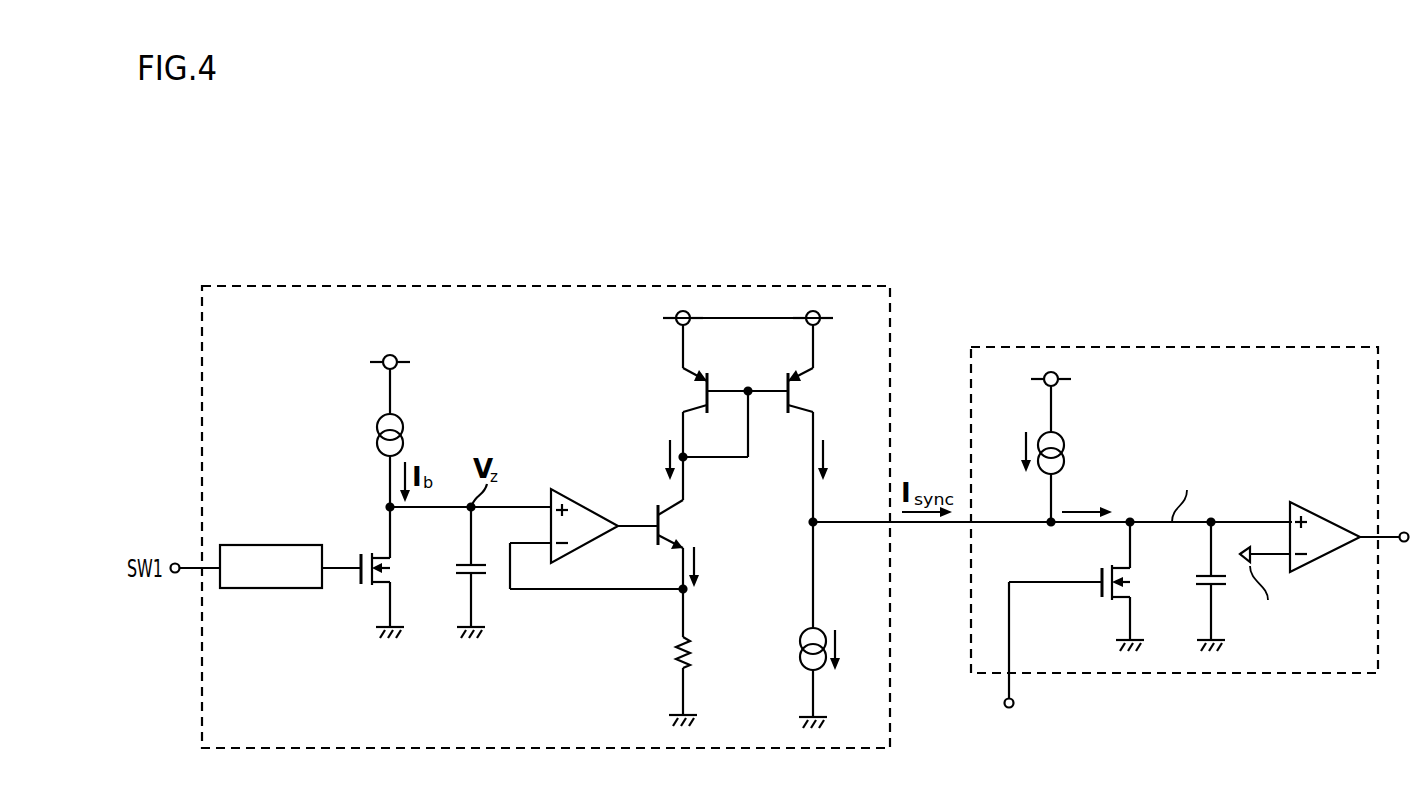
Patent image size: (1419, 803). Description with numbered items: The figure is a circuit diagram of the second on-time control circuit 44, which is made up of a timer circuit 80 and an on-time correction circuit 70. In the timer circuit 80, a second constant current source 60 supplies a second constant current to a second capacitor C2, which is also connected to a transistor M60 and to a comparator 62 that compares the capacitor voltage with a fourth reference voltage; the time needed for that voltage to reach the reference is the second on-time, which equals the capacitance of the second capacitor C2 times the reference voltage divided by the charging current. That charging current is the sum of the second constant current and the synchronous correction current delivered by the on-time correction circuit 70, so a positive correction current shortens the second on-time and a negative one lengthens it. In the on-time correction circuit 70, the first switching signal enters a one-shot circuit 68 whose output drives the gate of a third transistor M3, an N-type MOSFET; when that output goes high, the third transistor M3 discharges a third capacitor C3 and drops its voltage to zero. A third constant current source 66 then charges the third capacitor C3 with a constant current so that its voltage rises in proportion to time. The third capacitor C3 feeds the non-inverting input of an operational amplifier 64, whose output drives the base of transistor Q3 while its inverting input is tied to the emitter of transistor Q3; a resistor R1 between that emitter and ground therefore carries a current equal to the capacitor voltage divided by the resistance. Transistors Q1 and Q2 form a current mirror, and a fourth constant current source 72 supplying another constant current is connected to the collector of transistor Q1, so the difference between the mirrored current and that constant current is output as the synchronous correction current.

The on-time correction circuit 70 is at (547, 287).
The timer circuit 80 is at (1208, 348).
The one-shot circuit 68 is at (270, 545).
The third constant current source 66 is at (403, 437).
The operational amplifier 64 is at (588, 501).
The fourth constant current source 72 is at (818, 628).
The second constant current source 60 is at (1066, 455).
The comparator 62 is at (1326, 518).
The second on-time control circuit 44 is at (788, 789).
The third transistor M3 is at (366, 592).
The third capacitor C3 is at (452, 570).
The transistor Q1 is at (819, 469).
The transistor Q2 is at (736, 405).
The transistor Q3 is at (686, 522).
The resistor R1 is at (698, 657).
The transistor M60 is at (1105, 603).
The second capacitor C2 is at (1195, 582).